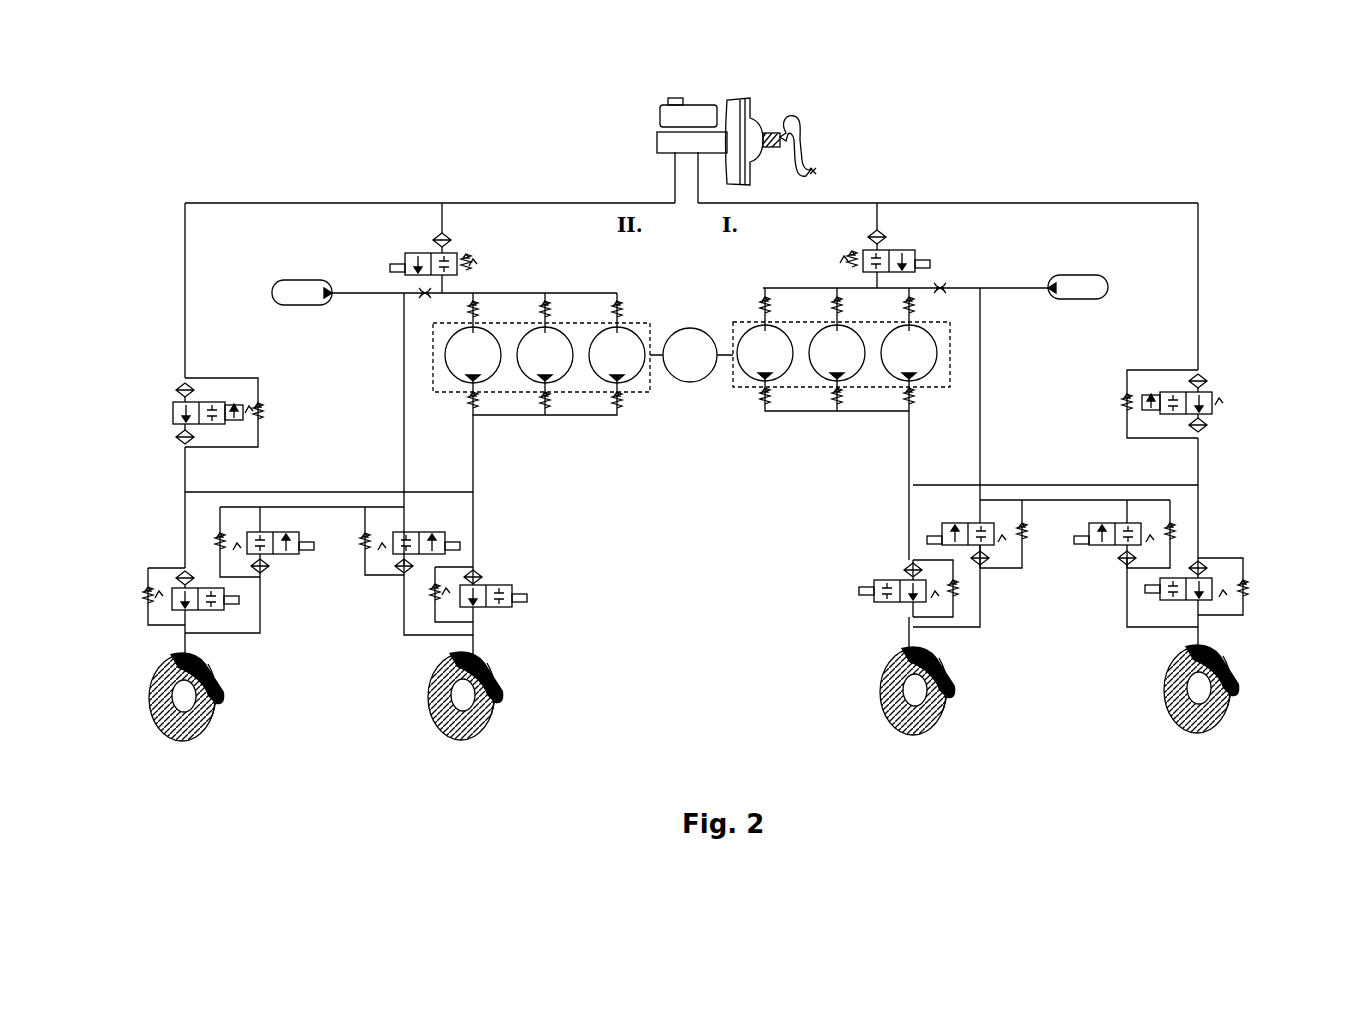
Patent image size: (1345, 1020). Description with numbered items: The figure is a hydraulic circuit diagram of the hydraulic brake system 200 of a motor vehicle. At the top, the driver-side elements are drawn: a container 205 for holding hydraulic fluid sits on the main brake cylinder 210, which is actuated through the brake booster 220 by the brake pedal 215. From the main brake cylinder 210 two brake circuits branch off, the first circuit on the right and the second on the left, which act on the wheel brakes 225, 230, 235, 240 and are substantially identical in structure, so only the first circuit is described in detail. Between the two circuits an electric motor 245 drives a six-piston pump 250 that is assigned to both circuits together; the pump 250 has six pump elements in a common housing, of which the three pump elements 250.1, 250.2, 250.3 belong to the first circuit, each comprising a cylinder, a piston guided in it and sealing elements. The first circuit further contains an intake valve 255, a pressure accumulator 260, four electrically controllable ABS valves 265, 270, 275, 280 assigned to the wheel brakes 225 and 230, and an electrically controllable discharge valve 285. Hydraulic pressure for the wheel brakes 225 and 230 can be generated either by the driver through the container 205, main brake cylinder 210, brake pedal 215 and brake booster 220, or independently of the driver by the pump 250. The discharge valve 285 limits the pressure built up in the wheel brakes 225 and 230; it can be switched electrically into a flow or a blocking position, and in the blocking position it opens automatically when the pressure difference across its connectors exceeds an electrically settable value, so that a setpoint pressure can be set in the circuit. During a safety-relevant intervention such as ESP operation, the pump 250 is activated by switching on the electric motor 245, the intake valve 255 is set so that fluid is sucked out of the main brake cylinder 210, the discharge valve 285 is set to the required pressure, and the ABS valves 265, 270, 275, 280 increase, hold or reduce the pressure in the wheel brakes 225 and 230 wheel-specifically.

The hydraulic brake system 200 is at (236, 115).
The container 205 is at (660, 108).
The main brake cylinder 210 is at (657, 140).
The brake pedal 215 is at (807, 170).
The brake booster 220 is at (748, 97).
The wheel brake 225 is at (1170, 690).
The wheel brake 230 is at (882, 680).
The wheel brake 235 is at (500, 695).
The wheel brake 240 is at (215, 702).
The electric motor 245 is at (690, 328).
The 6-piston pump 250 is at (650, 392).
The pump element 250.1 is at (765, 353).
The pump element 250.2 is at (837, 353).
The pump element 250.3 is at (909, 353).
The intake valve 255 is at (932, 266).
The pressure accumulator 260 is at (1085, 276).
The ABS valve 265 is at (928, 540).
The ABS valve 270 is at (1172, 522).
The ABS valve 275 is at (860, 590).
The ABS valve 280 is at (1245, 582).
The discharge valve 285 is at (1216, 396).